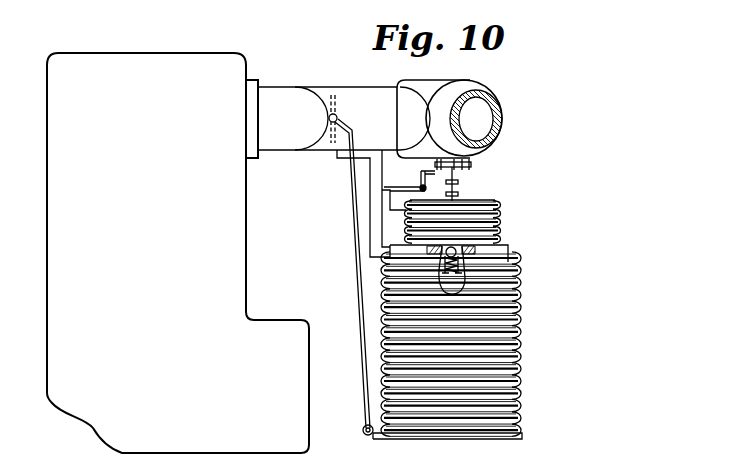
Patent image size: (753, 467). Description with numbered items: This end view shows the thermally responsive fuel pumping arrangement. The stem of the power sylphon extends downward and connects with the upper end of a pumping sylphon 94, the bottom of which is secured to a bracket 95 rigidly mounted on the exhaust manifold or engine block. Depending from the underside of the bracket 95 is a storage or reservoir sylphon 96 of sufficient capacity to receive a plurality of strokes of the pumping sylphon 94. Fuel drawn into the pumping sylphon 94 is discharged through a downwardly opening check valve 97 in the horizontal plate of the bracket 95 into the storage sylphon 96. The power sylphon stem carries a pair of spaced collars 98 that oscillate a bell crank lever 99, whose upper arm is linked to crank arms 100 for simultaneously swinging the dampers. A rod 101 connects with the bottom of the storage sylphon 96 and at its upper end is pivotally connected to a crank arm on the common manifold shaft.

The pumping sylphon 94 is at (500, 226).
The bracket 95 is at (378, 186).
The storage or reservoir sylphon 96 is at (518, 334).
The check valve 97 is at (466, 268).
The collars 98 is at (456, 193).
The bell crank lever 99 is at (417, 178).
The crank arms 100 is at (472, 163).
The rod 101 is at (356, 263).